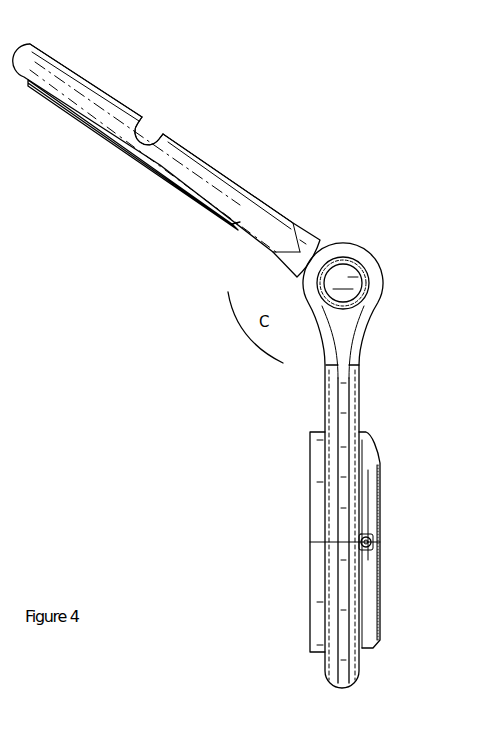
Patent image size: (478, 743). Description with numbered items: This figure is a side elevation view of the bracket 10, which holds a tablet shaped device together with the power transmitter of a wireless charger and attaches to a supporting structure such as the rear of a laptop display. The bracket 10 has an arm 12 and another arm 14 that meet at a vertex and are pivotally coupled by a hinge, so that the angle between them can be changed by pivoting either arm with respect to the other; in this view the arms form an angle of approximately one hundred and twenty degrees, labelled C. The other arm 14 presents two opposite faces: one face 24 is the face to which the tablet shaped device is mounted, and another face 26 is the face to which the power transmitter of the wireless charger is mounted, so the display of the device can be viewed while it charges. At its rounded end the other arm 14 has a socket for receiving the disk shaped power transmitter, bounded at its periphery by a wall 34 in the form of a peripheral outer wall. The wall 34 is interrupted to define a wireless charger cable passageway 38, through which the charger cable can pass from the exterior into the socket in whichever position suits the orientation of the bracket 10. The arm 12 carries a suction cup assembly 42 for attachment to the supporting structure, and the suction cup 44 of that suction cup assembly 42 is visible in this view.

The bracket 10 is at (355, 125).
The arm 12 is at (358, 672).
The other arm 14 is at (68, 67).
The face 24 is at (169, 206).
The another face 26 is at (205, 136).
The wall 34 is at (125, 110).
The wireless charger cable passageway 38 is at (154, 114).
The suction cup assembly 42 is at (375, 590).
The suction cup 44 is at (317, 563).